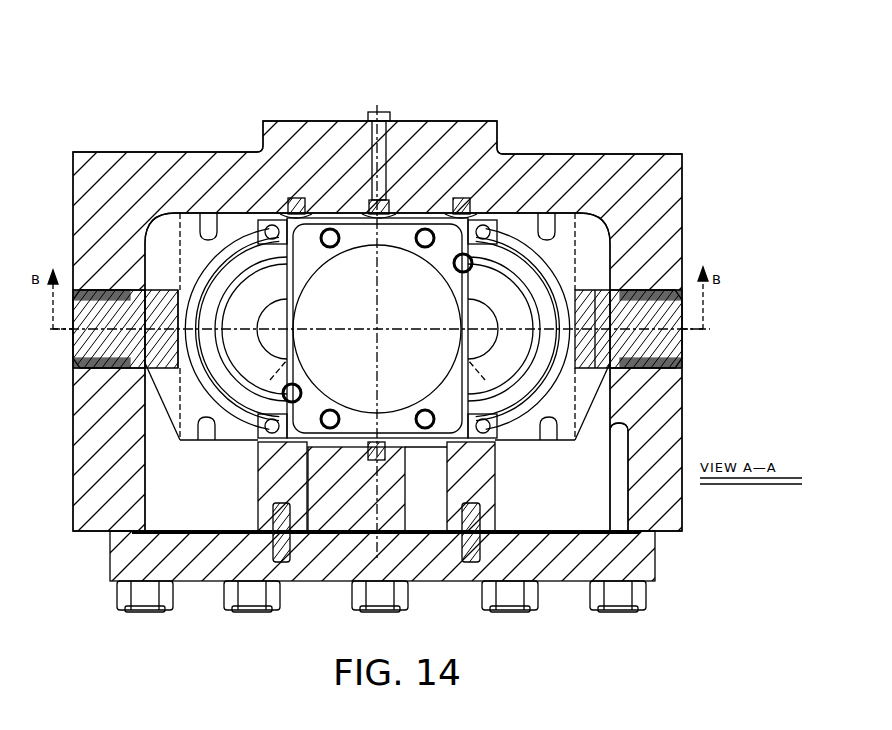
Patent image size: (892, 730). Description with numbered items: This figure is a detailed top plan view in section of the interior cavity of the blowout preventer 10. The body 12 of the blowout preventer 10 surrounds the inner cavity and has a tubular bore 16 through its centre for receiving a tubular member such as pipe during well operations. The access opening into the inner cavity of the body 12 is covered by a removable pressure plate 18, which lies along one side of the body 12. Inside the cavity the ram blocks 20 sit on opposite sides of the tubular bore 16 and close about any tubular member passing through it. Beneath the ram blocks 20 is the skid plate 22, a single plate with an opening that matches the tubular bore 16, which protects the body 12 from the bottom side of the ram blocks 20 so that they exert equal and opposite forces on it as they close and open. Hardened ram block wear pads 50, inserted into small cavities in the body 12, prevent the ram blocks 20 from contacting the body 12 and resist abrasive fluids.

The blowout preventer 10 is at (369, 271).
The body 12 is at (612, 154).
The tubular bore 16 is at (423, 343).
The pressure plate 18 is at (647, 553).
The ram blocks 20 is at (203, 238).
The skid plate 22 is at (403, 233).
The ram block wear pads 50 is at (388, 197).